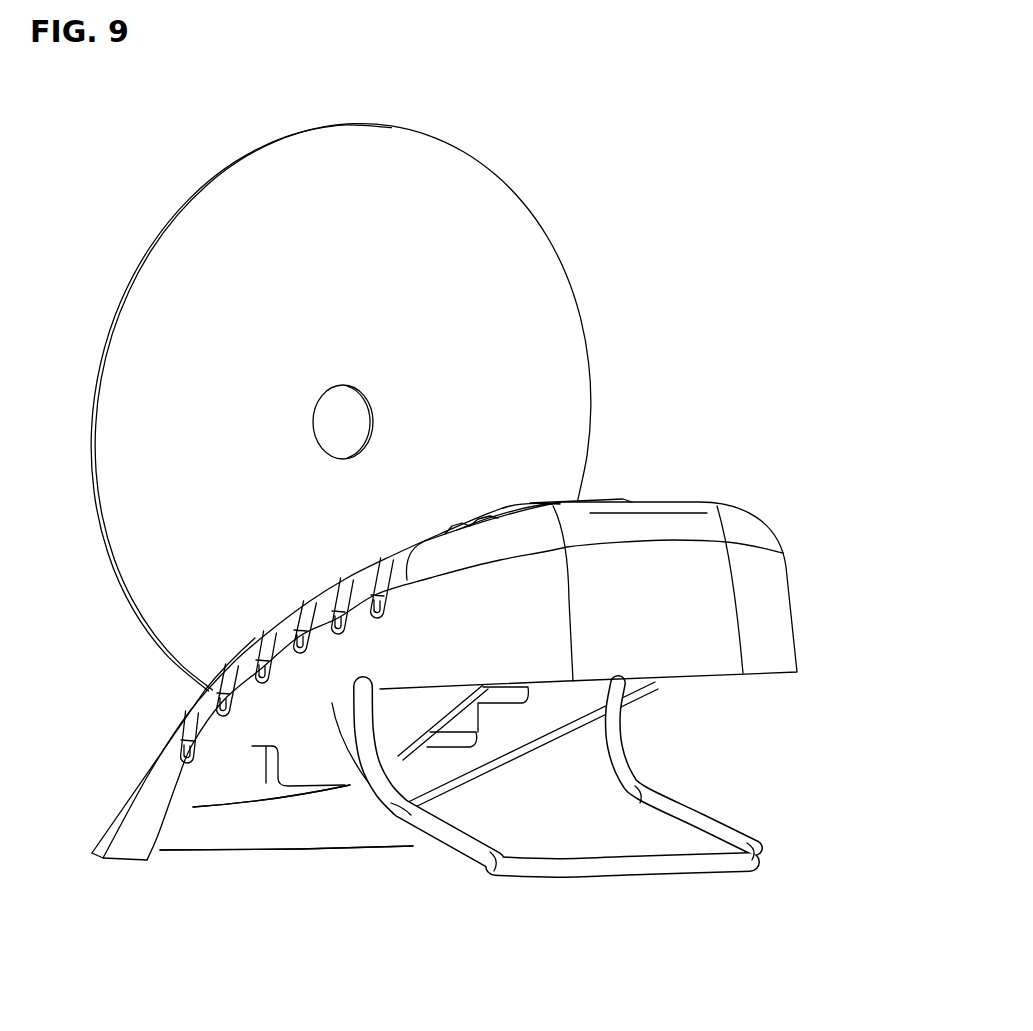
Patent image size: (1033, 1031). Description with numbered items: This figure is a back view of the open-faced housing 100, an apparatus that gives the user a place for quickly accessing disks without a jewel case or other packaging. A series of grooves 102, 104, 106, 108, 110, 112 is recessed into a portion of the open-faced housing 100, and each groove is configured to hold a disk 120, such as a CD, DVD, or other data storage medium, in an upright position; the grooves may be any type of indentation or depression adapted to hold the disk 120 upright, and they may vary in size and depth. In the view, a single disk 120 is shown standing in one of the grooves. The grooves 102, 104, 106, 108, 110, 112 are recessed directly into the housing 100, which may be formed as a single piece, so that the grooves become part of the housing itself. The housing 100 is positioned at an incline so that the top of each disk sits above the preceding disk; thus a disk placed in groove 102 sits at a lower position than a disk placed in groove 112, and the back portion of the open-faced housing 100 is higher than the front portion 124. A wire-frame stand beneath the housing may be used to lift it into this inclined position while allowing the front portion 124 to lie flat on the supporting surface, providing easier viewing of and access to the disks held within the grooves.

The open-faced housing 100 is at (682, 523).
The groove 102 is at (132, 847).
The groove 104 is at (224, 713).
The groove 106 is at (263, 680).
The groove 108 is at (301, 650).
The groove 110 is at (339, 631).
The groove 112 is at (378, 615).
The disk 120 is at (547, 300).
The front portion 124 is at (225, 842).